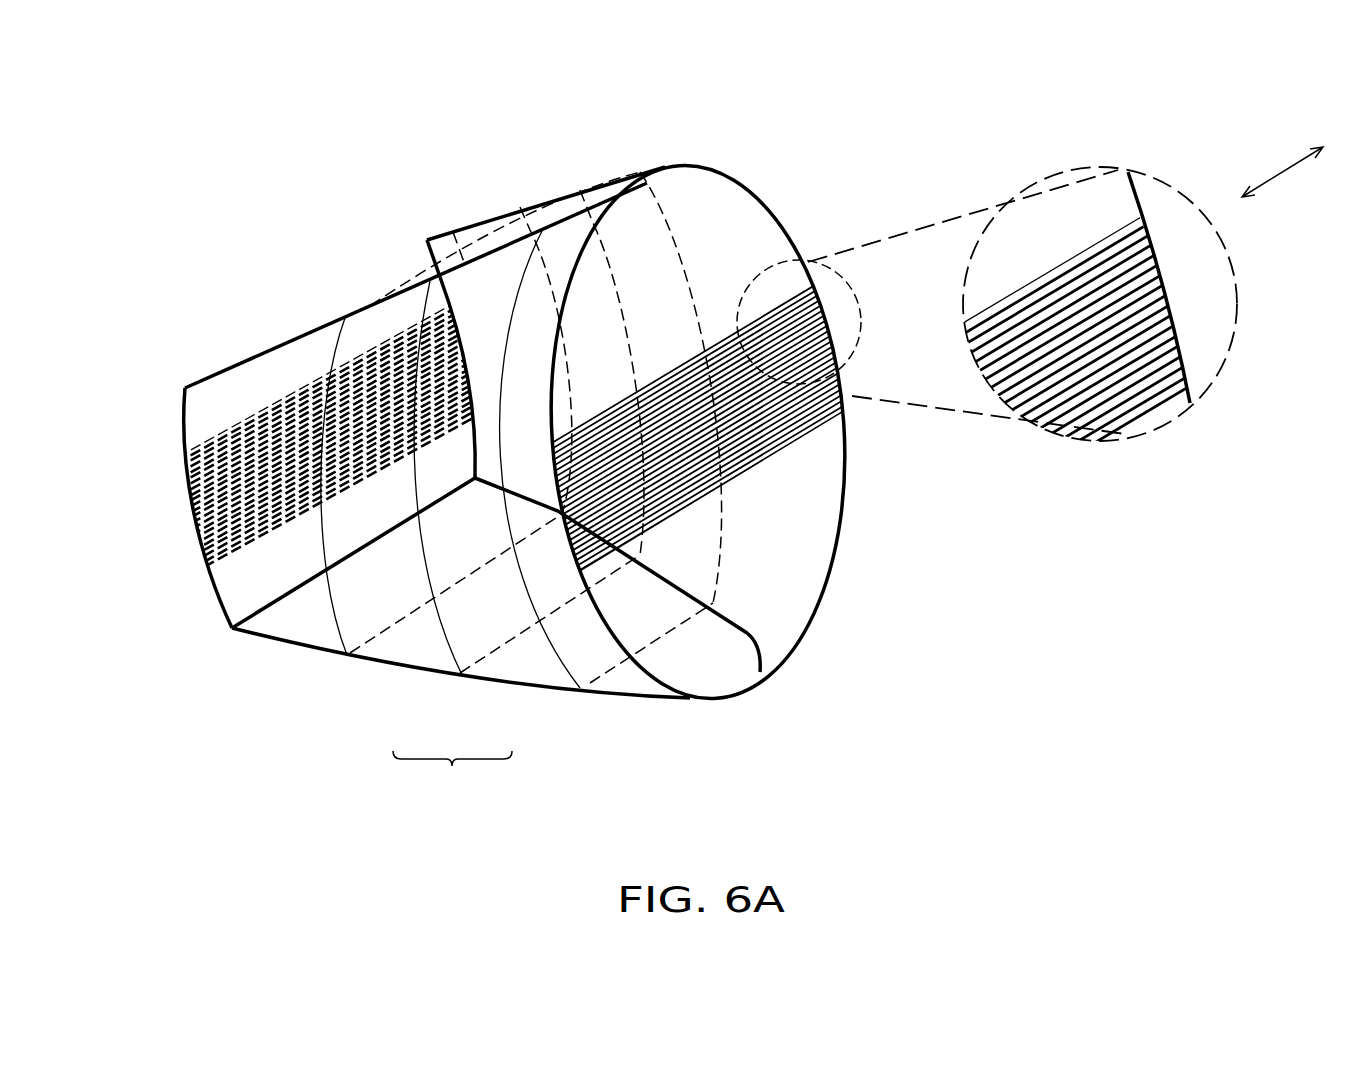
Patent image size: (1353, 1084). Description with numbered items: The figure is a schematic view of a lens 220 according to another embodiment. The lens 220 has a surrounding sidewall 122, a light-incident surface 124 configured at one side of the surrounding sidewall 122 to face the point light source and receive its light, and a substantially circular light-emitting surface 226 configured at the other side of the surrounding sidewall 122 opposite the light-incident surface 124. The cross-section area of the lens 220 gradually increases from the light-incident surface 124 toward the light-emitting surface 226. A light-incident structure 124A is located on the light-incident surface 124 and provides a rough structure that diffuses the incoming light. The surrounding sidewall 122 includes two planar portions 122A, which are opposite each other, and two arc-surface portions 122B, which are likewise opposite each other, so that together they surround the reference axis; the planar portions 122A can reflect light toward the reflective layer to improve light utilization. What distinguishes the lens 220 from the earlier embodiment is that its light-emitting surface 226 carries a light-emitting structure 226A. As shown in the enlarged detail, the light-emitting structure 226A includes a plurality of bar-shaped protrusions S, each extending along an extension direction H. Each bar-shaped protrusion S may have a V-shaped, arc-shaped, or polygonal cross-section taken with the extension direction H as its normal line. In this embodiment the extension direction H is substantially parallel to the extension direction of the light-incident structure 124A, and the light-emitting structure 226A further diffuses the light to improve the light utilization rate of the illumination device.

The lens 220 is at (1170, 763).
The light-emitting surface 226 is at (780, 247).
The light-emitting structure 226A is at (760, 375).
The light-incident surface 124 is at (243, 590).
The light-incident structure 124A is at (213, 434).
The planar portions 122A is at (457, 240).
The arc-surface portions 122B is at (671, 219).
The surrounding sidewall 122 is at (452, 782).
The bar-shaped protrusions S is at (1100, 240).
The extension direction H is at (1282, 165).